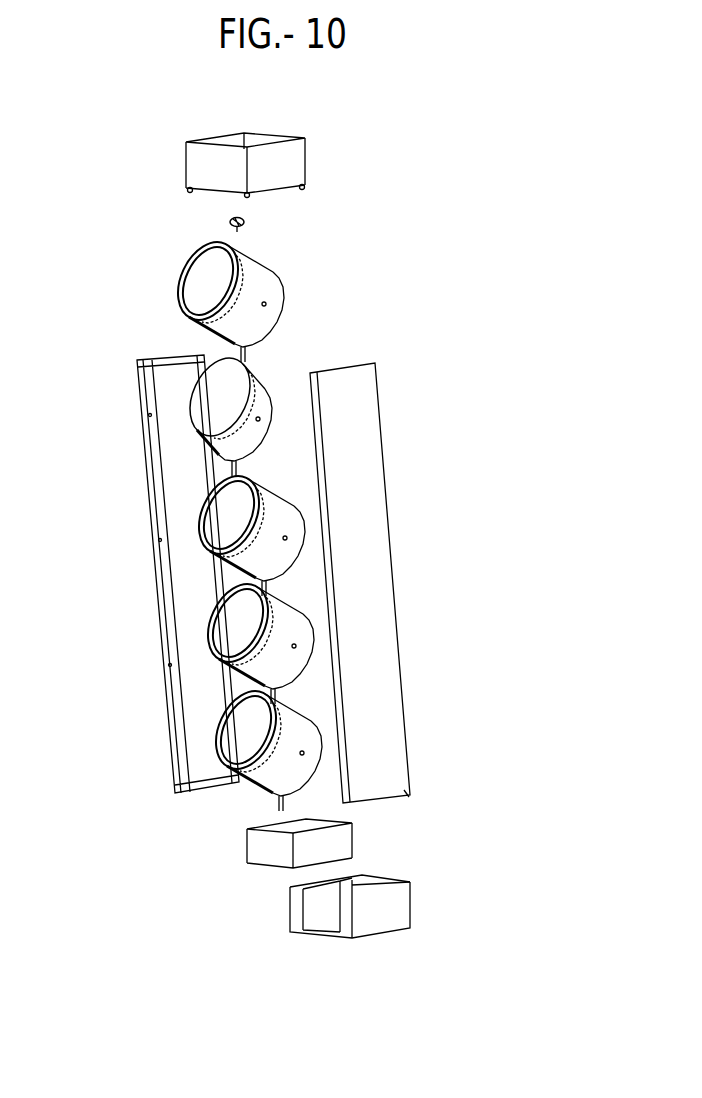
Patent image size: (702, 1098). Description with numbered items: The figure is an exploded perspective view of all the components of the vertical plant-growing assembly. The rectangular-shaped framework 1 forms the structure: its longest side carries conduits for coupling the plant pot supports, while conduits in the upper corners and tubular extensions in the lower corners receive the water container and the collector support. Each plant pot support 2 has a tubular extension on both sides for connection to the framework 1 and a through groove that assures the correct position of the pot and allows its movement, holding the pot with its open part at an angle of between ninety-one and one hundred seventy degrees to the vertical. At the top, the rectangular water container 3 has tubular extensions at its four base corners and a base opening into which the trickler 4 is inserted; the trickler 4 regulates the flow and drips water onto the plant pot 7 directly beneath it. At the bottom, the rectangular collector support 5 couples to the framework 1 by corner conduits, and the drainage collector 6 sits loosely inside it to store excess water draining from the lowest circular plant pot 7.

The framework 1 is at (416, 482).
The plant pot support 2 is at (281, 388).
The water container 3 is at (340, 156).
The trickler 4 is at (279, 226).
The collector support 5 is at (432, 891).
The drainage collector 6 is at (201, 859).
The plant pot 7 is at (155, 286).